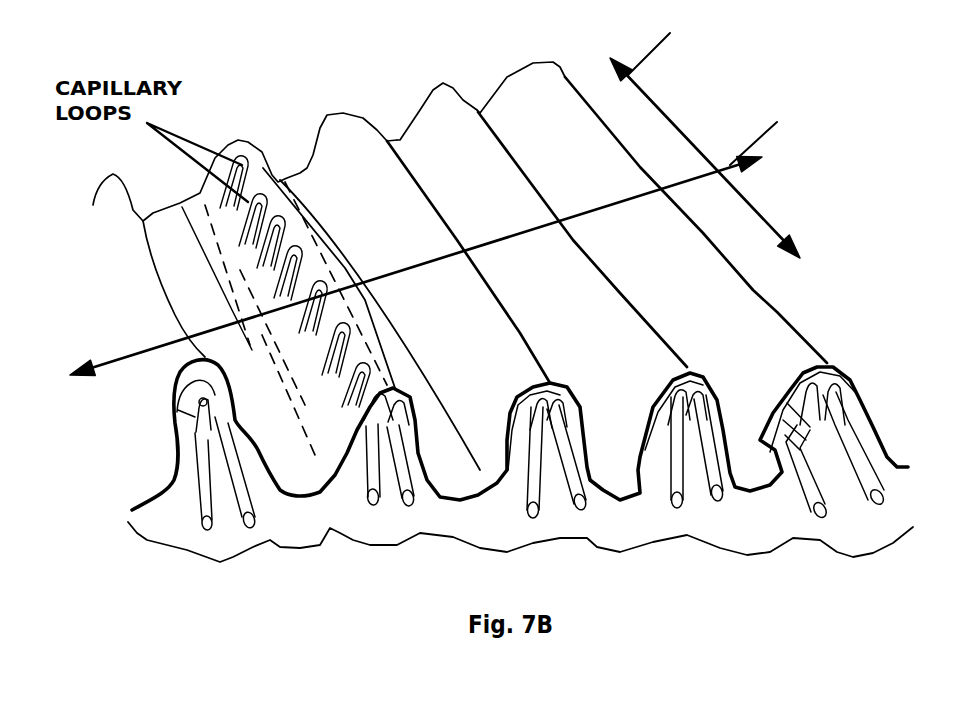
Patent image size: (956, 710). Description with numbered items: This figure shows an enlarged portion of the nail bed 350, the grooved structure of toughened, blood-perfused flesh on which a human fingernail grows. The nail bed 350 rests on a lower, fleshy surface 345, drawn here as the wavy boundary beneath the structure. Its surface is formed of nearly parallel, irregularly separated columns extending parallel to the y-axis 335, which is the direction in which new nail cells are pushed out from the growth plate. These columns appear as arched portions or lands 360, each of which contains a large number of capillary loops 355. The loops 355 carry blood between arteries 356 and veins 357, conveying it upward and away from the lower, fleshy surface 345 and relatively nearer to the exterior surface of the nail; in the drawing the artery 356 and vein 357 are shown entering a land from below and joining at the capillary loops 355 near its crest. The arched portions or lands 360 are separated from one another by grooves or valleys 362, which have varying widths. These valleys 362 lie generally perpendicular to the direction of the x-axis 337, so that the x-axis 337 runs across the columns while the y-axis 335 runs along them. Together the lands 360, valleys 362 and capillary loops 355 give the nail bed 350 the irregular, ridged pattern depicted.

The y-axis 335 is at (632, 82).
The x-axis 337 is at (763, 158).
The lower fleshy surface 345 is at (587, 537).
The nail bed 350 is at (133, 303).
The capillary loops 355 is at (808, 392).
The arteries 356 is at (372, 507).
The veins 357 is at (407, 507).
The arched portions or lands 360 is at (793, 337).
The grooves or valleys 362 is at (477, 110).